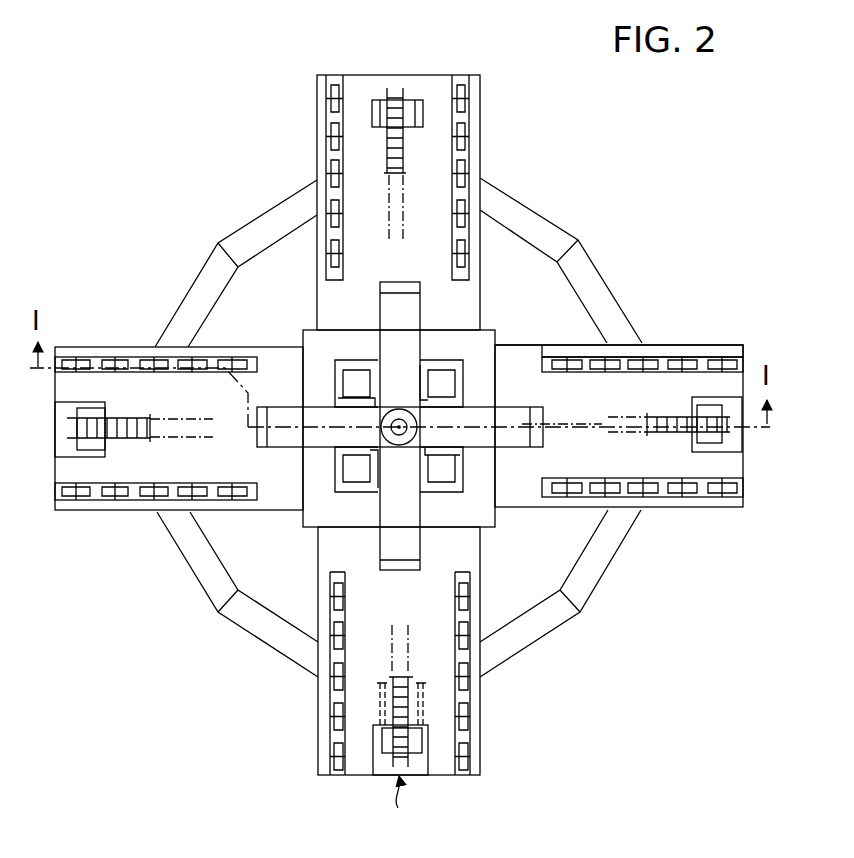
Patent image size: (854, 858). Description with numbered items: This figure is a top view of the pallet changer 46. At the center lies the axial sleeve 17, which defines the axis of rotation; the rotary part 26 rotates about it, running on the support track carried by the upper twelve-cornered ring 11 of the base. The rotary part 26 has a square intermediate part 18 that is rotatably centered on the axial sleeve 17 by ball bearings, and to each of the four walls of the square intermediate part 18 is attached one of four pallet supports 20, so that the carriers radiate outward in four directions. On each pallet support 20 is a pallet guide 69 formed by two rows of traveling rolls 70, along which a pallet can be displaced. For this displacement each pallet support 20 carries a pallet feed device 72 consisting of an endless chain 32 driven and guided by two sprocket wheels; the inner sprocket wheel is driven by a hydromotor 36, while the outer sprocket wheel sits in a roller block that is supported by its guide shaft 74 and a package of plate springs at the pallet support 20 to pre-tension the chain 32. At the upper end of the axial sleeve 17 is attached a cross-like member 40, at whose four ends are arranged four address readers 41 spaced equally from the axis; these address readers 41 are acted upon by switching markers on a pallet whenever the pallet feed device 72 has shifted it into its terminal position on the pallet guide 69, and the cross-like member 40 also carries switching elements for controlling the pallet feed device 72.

The upper twelve-cornered ring 11 is at (545, 228).
The axial sleeve 17 is at (385, 427).
The square intermediate part 18 is at (311, 338).
The pallet support 20 is at (480, 110).
The rotary part 26 is at (661, 340).
The endless chain 32 is at (400, 695).
The hydromotor 36 is at (442, 372).
The cross-like member 40 is at (502, 441).
The address reader 41 is at (383, 292).
The pallet changer 46 is at (188, 193).
The pallet guide 69 is at (456, 66).
The traveling roll 70 is at (462, 140).
The pallet feed device 72 is at (399, 808).
The guide shaft 74 is at (382, 707).